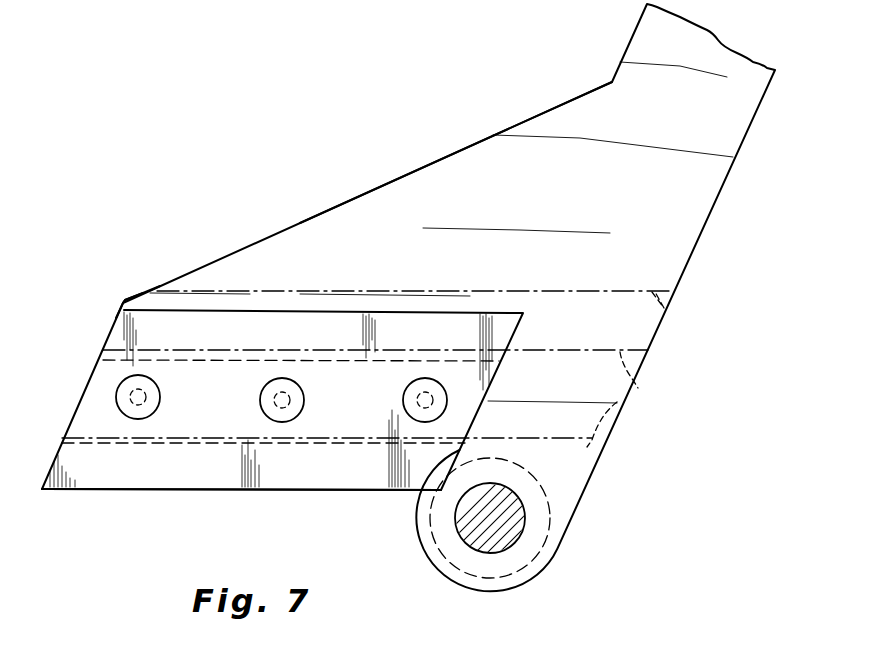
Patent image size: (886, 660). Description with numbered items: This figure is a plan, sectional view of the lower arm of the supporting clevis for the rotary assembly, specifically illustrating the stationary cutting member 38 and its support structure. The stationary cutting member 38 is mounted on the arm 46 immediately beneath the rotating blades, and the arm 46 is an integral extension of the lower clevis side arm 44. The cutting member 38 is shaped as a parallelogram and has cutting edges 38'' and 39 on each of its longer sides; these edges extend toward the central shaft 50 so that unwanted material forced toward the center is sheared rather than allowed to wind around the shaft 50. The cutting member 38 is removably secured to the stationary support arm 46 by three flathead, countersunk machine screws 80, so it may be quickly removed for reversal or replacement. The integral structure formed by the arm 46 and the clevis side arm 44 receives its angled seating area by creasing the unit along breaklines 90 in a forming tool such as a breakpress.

The lower clevis side arm 44 is at (729, 172).
The arm 46 is at (370, 191).
The cutting edge 39 is at (143, 308).
The stationary cutting member 38 is at (268, 400).
The cutting edge 38'' is at (239, 512).
The flathead countersunk machine screws 80 is at (160, 393).
The shaft 50 is at (513, 523).
The breaklines 90 is at (667, 308).